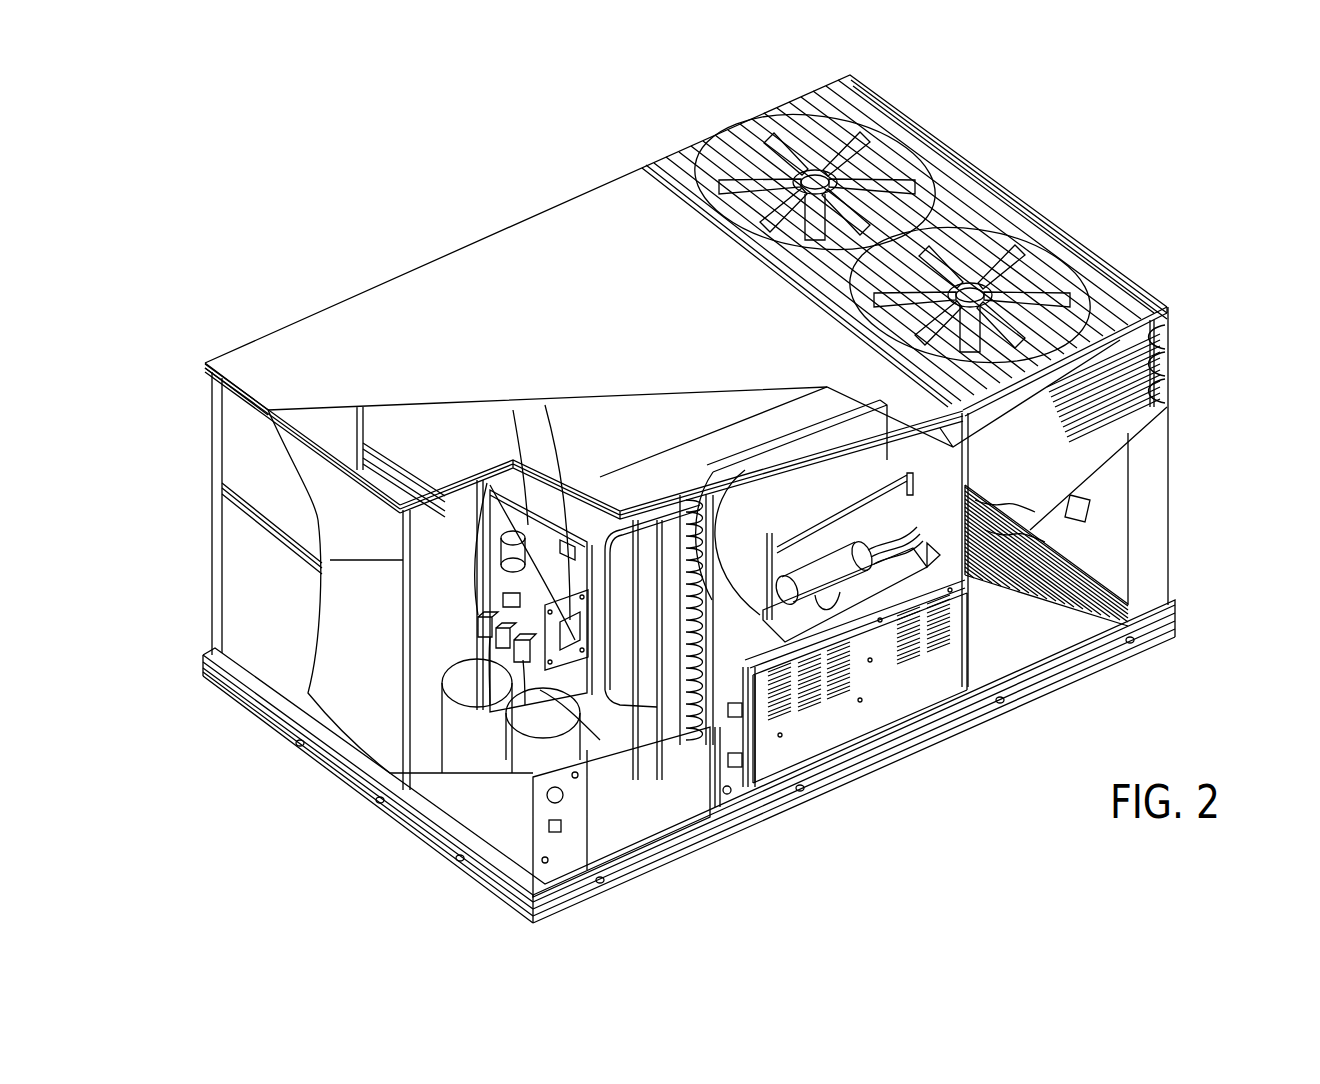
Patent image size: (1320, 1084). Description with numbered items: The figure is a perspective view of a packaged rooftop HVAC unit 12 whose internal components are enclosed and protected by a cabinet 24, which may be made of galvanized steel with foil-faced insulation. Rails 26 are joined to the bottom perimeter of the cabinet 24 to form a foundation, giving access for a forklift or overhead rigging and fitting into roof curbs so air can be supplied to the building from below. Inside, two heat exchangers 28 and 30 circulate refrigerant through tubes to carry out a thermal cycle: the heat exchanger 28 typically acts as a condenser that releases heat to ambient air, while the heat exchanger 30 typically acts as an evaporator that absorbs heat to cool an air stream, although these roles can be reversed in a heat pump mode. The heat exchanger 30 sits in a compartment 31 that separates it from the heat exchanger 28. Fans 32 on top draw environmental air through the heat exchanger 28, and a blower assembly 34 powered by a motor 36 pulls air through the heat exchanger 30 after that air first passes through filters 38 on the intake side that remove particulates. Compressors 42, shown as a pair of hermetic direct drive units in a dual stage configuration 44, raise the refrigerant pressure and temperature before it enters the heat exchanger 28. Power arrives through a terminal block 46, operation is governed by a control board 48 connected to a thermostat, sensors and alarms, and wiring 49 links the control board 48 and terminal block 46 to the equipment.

The HVAC unit 12 is at (395, 180).
The cabinet 24 is at (247, 627).
The rails 26 is at (277, 720).
The heat exchanger 28 is at (1168, 372).
The heat exchanger 30 is at (687, 708).
The compartment 31 is at (707, 557).
The fans 32 is at (1025, 235).
The blower assembly 34 is at (893, 512).
The motor 36 is at (822, 560).
The filters 38 is at (650, 545).
The compressors 42 is at (447, 713).
The dual stage configuration 44 is at (437, 660).
The terminal block 46 is at (495, 600).
The control board 48 is at (544, 511).
The wiring 49 is at (640, 530).